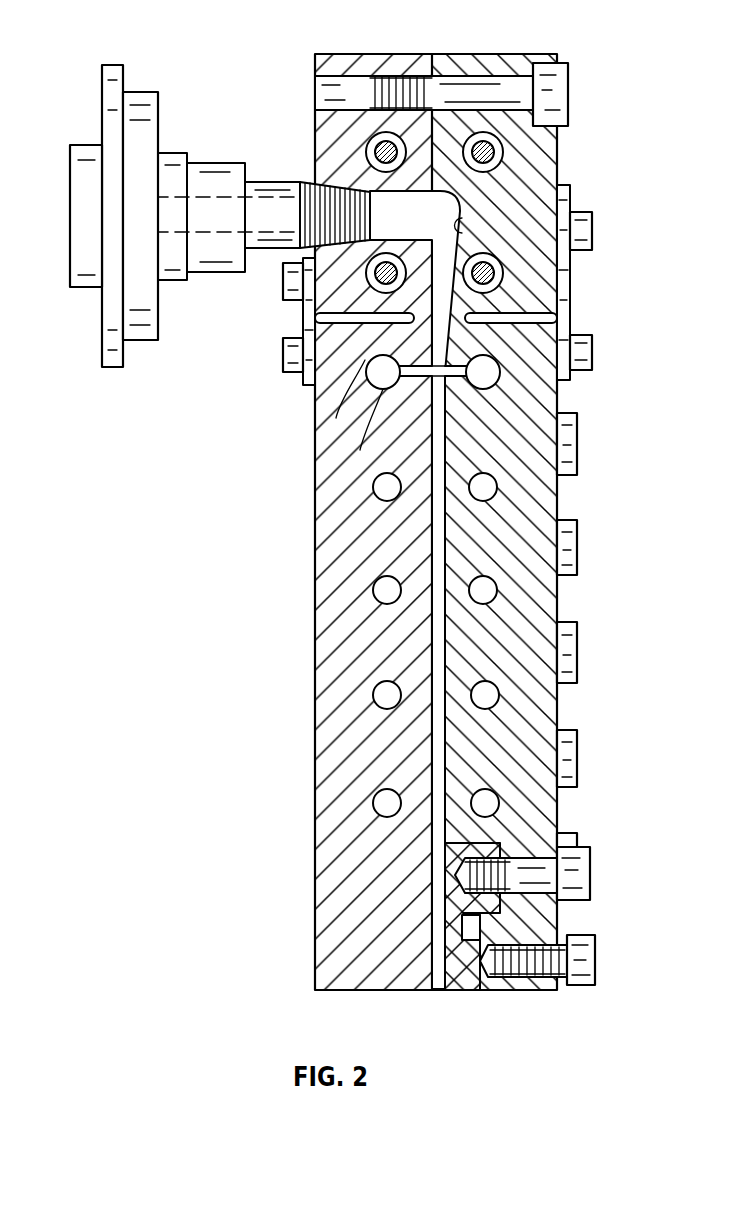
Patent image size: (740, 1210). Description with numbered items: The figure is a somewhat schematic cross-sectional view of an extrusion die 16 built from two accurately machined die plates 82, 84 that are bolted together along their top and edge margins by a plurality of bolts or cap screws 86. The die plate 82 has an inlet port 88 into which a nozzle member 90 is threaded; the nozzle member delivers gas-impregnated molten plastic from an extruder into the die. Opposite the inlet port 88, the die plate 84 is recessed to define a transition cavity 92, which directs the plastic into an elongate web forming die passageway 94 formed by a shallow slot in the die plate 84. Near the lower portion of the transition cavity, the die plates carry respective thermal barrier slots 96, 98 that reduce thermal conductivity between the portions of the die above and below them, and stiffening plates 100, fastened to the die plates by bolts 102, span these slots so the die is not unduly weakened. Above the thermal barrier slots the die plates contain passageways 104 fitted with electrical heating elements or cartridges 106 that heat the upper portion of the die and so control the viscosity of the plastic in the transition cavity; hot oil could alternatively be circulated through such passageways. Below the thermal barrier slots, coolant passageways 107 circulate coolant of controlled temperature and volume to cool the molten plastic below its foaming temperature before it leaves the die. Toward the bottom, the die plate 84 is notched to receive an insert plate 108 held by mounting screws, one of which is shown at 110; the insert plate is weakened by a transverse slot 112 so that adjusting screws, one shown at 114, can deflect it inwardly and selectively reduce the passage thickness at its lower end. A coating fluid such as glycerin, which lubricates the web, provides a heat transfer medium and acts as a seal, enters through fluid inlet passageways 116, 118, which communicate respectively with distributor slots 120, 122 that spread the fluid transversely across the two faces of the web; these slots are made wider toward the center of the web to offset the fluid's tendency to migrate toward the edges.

The die 16 is at (307, 851).
The die plate 82 is at (316, 748).
The die plate 84 is at (563, 714).
The bolts or cap screws 86 is at (572, 125).
The inlet port 88 is at (362, 188).
The nozzle member 90 is at (107, 330).
The transition cavity 92 is at (463, 232).
The web forming die passageway 94 is at (510, 348).
The thermal barrier slot 96 is at (336, 418).
The thermal barrier slot 98 is at (480, 318).
The stiffening plates 100 is at (568, 262).
The bolts 102 is at (592, 232).
The passageways 104 is at (500, 135).
The electrical heating elements or cartridges 106 is at (485, 141).
The coolant passageways 107 is at (378, 697).
The insert plate 108 is at (532, 905).
The mounting screw 110 is at (584, 871).
The transverse slot 112 is at (478, 930).
The adjusting screw 114 is at (584, 972).
The fluid inlet passageway 116 is at (380, 388).
The fluid inlet passageway 118 is at (470, 380).
The distributor slot 120 is at (360, 450).
The distributor slot 122 is at (492, 388).